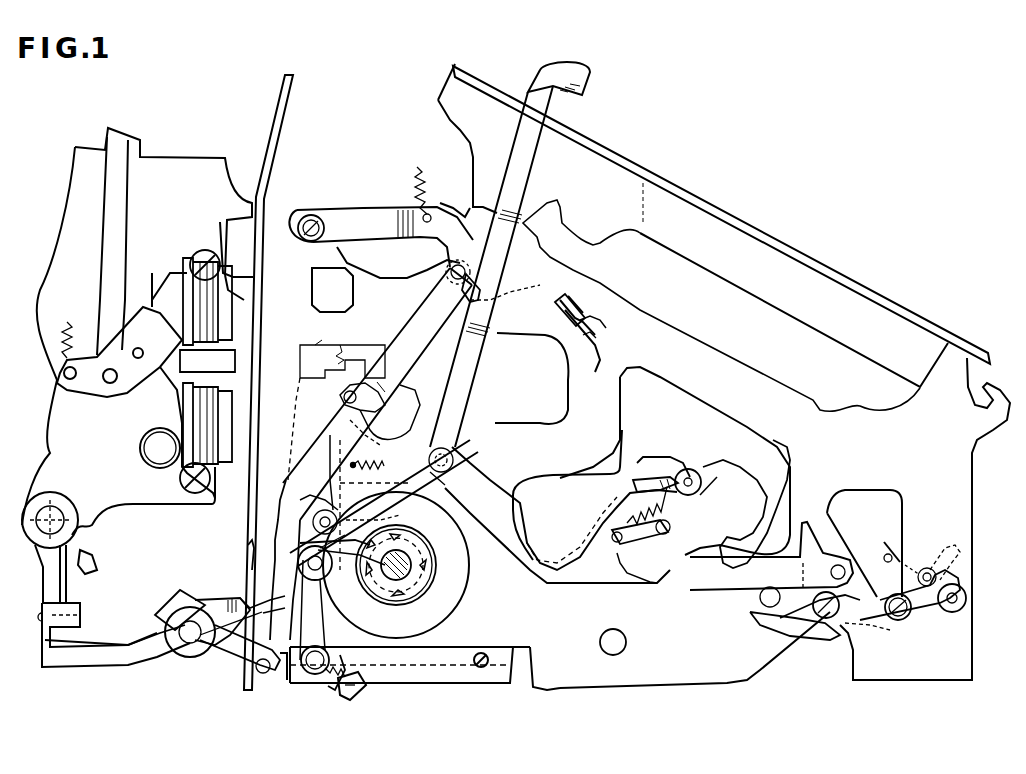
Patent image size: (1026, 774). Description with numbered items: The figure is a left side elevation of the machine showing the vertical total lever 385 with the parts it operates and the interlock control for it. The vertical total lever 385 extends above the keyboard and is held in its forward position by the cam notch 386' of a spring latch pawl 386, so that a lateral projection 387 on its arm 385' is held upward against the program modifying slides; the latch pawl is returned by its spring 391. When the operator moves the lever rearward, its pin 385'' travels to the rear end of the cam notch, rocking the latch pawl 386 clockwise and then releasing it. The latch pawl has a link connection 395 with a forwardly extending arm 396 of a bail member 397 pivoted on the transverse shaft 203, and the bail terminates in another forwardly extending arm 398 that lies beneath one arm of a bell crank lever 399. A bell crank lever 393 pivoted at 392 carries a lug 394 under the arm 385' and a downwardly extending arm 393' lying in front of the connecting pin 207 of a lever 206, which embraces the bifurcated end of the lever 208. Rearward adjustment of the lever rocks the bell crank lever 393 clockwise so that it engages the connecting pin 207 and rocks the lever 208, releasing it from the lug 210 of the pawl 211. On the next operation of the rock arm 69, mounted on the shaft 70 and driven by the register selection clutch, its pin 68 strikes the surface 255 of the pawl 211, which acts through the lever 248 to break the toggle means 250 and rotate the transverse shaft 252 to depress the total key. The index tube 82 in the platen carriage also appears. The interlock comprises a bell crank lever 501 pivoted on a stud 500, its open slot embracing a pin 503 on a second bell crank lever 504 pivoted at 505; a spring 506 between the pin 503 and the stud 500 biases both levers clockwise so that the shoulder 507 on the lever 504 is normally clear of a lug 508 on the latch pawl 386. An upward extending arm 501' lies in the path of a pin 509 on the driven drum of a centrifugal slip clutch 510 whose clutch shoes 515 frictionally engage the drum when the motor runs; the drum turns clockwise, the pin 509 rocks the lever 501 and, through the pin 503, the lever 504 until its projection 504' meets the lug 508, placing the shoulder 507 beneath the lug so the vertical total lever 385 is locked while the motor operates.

The pin 68 is at (640, 535).
The rocker 69 is at (702, 484).
The shaft 70 is at (620, 655).
The index tube 82 is at (140, 447).
The transverse shaft 203 is at (185, 640).
The lever 206 is at (300, 505).
The connecting pin 207 is at (326, 490).
The lever 208 is at (513, 553).
The lug 210 is at (668, 470).
The pawl 211 is at (690, 580).
The lever 248 is at (778, 622).
The toggle means 250 is at (890, 622).
The transverse shaft 252 is at (922, 568).
The surface 255 is at (700, 498).
The vertical total lever 385 is at (510, 254).
The arm 385' is at (377, 394).
The pin 385'' is at (527, 288).
The spring latch pawl 386 is at (381, 220).
The cam notch 386' is at (503, 281).
The lateral projection 387 is at (298, 395).
The spring 391 is at (428, 168).
The pivot 392 is at (398, 423).
The bell crank lever 393 is at (384, 501).
The downwardly extending arm 393' is at (399, 487).
The lug 394 is at (388, 398).
The link connection 395 is at (296, 460).
The forwardly extending arm 396 is at (243, 664).
The bail member 397 is at (165, 598).
The forwardly extending arm 398 is at (205, 603).
The bell crank lever 399 is at (245, 545).
The pivot stud 500 is at (310, 672).
The bell crank lever 501 is at (400, 663).
The upward extending arm 501' is at (367, 666).
The pin 503 is at (358, 692).
The bell crank lever 504 is at (326, 587).
The projection 504' is at (605, 341).
The pivot 505 is at (345, 570).
The spring 506 is at (338, 690).
The shoulder 507 is at (618, 317).
The lug 508 is at (578, 300).
The pin 509 is at (380, 595).
The centrifugal slip clutch 510 is at (438, 532).
The clutch shoe 515 is at (428, 572).